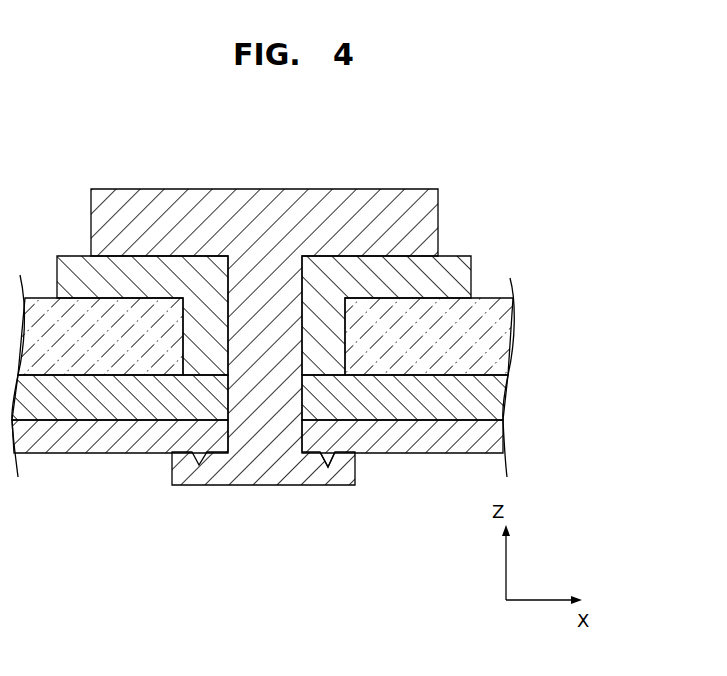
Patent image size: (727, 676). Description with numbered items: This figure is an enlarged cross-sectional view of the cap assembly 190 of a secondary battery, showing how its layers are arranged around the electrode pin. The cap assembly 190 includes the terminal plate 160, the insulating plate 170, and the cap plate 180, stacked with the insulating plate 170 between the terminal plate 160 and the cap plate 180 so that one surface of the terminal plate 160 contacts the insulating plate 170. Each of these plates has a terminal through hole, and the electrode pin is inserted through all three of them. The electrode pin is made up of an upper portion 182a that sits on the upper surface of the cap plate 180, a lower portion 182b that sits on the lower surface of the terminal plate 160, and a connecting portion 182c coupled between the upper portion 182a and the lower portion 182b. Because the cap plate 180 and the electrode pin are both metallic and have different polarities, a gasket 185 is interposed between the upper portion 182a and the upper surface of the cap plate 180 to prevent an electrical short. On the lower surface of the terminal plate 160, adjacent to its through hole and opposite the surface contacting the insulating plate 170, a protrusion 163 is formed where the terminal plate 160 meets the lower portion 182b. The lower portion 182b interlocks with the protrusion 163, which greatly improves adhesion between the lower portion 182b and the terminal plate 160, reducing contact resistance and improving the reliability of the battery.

The cap assembly 190 is at (523, 175).
The gasket 185 is at (463, 277).
The cap plate 180 is at (493, 335).
The insulating plate 170 is at (490, 402).
The terminal plate 160 is at (490, 438).
The upper portion 182a is at (268, 224).
The lower portion 182b is at (265, 470).
The connecting portion 182c is at (258, 338).
The protrusion 163 is at (337, 463).